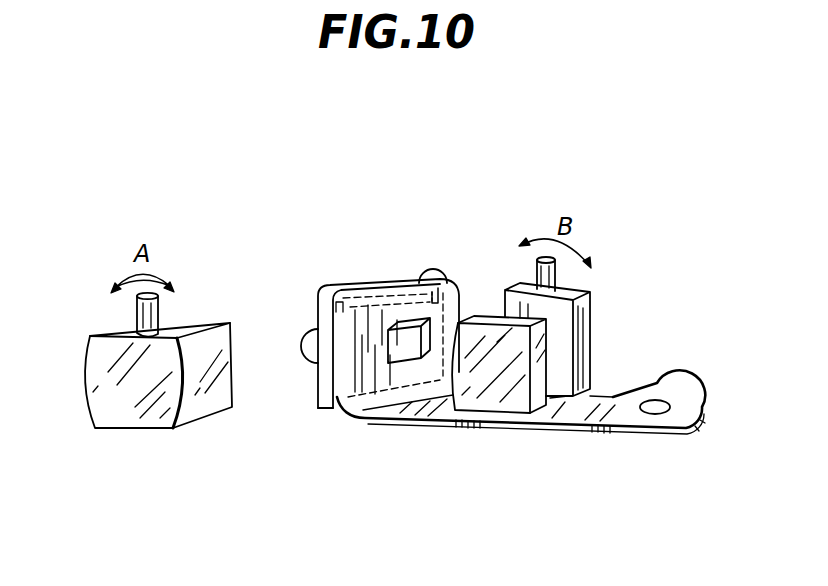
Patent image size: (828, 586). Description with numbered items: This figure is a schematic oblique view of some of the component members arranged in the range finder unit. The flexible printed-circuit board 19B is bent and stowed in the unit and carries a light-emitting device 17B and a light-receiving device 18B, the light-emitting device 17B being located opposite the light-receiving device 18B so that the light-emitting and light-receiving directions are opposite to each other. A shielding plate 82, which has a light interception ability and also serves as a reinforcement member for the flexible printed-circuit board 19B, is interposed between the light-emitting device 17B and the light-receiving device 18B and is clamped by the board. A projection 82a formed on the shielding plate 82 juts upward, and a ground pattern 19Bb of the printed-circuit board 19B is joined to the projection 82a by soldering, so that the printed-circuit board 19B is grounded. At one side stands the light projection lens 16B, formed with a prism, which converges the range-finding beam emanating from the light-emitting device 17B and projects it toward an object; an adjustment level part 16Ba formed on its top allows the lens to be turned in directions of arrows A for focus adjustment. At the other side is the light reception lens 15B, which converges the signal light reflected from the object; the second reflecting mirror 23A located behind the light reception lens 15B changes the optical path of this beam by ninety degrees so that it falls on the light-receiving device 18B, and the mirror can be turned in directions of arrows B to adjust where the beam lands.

The light projection lens 16B is at (122, 422).
The adjustment level part 16Ba is at (152, 315).
The light-emitting device 17B is at (298, 355).
The shielding plate 82 is at (368, 320).
The projection 82a is at (440, 293).
The ground pattern 19Bb is at (438, 256).
The light-receiving device 18B is at (409, 347).
The light reception lens 15B is at (518, 400).
The second reflecting mirror 23A is at (568, 349).
The flexible printed-circuit board 19B is at (677, 430).